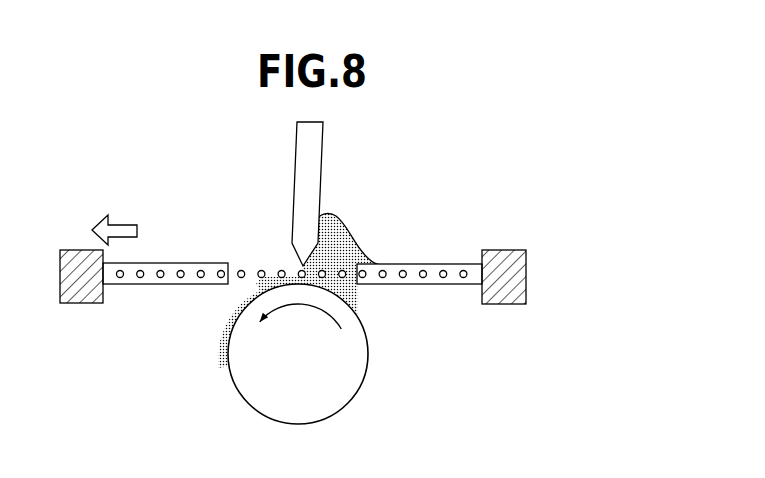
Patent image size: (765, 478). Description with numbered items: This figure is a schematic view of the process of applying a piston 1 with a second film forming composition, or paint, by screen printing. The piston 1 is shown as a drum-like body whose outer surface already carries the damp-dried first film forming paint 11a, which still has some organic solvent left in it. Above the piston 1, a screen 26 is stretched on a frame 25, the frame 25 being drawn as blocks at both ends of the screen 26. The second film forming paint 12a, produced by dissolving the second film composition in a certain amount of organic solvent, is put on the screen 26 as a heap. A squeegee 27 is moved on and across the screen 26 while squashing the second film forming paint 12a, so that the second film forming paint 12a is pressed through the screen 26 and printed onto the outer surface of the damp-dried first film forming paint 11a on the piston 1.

The image forming apparatus drum unit 1 is at (338, 363).
The first film forming paint 11a is at (369, 349).
The second film forming paint 12a is at (350, 233).
The frame 25 is at (507, 250).
The screen 26 is at (240, 260).
The squeegee 27 is at (313, 157).